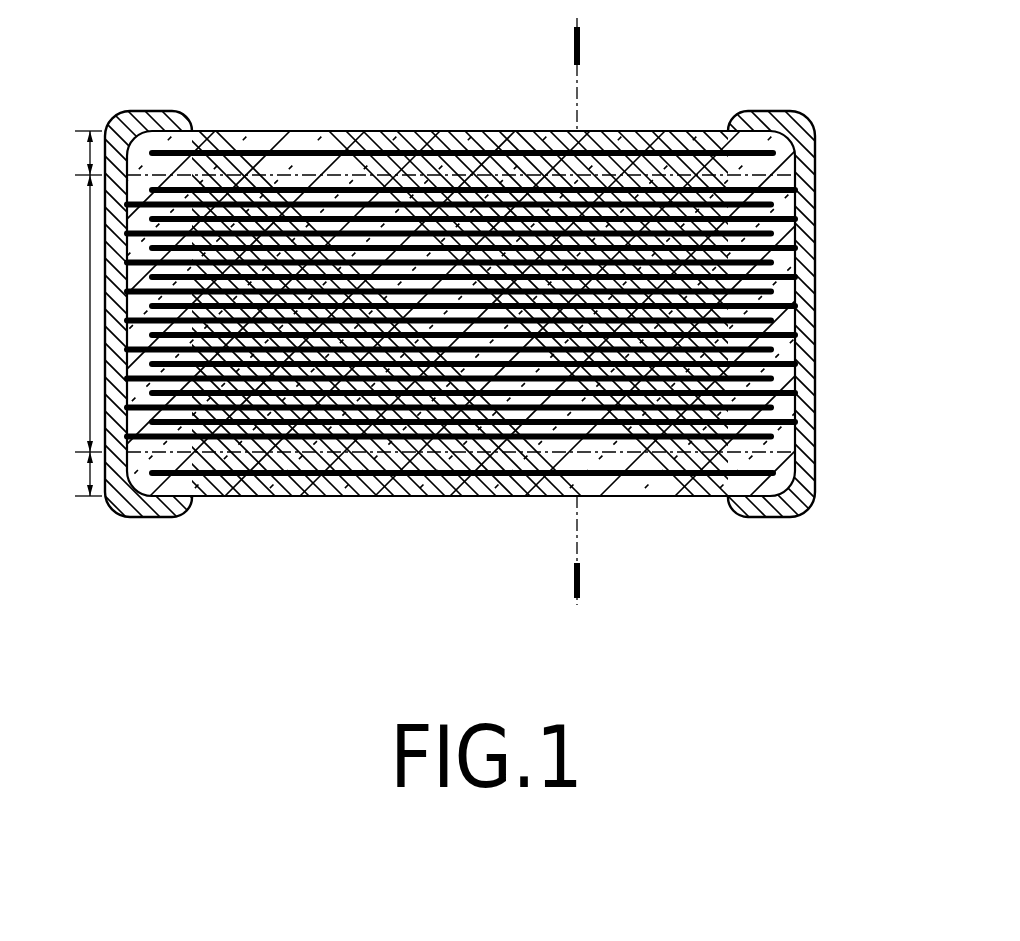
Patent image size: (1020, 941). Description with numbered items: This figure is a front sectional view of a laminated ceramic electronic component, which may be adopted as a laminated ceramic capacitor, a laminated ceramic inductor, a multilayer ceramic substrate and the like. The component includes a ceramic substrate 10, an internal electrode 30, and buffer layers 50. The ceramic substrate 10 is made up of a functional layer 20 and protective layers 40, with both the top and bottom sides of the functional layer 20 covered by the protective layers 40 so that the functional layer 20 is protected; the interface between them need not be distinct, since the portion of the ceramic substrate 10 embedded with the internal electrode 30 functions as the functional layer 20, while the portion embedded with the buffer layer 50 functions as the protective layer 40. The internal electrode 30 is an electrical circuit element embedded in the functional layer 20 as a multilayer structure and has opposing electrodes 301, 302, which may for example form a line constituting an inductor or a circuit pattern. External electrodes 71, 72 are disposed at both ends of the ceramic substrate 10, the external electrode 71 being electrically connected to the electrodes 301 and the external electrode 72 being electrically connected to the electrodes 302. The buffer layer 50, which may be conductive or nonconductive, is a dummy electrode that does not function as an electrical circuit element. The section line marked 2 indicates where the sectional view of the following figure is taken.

The ceramic substrate 10 is at (216, 130).
The functional layer 20 is at (90, 309).
The internal electrode 30 is at (504, 313).
The electrodes 301 is at (772, 206).
The electrodes 302 is at (776, 188).
The protective layer 40 is at (90, 150).
The buffer layer 50 is at (343, 129).
The external electrode 71 is at (143, 112).
The external electrode 72 is at (777, 111).
The section line II-II 2 is at (574, 45).